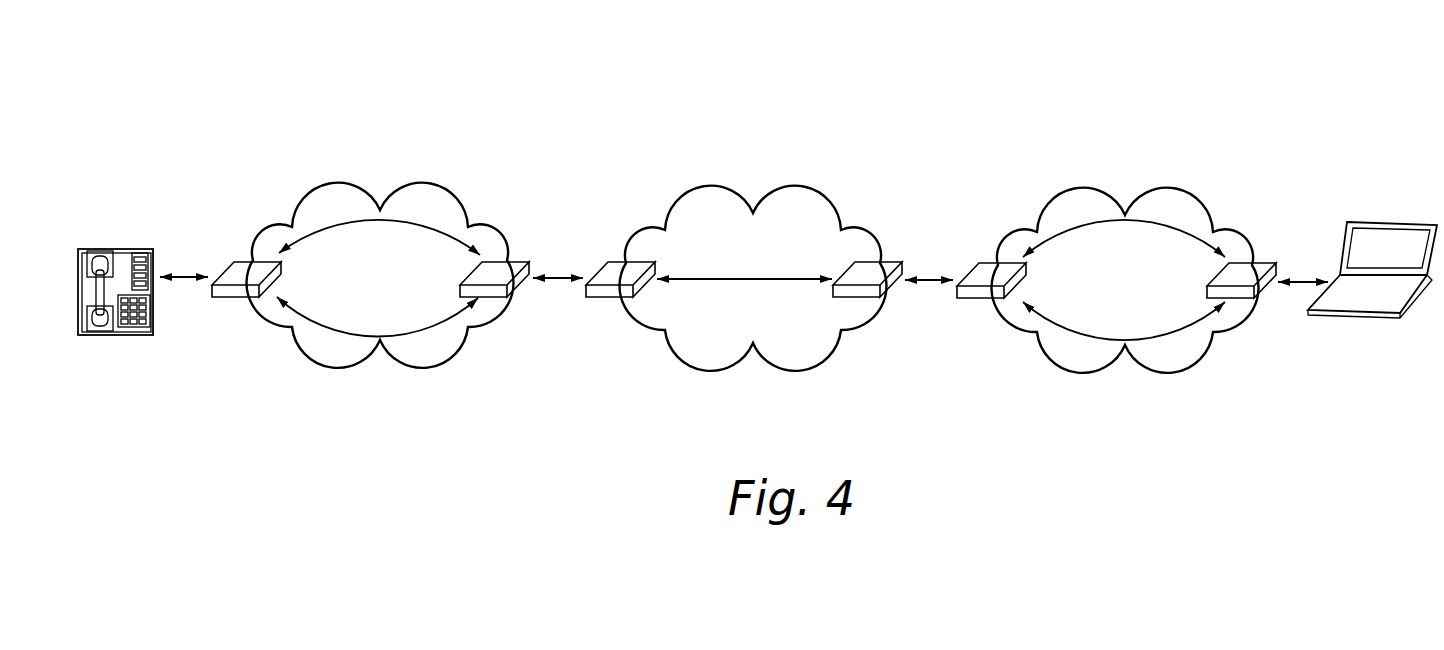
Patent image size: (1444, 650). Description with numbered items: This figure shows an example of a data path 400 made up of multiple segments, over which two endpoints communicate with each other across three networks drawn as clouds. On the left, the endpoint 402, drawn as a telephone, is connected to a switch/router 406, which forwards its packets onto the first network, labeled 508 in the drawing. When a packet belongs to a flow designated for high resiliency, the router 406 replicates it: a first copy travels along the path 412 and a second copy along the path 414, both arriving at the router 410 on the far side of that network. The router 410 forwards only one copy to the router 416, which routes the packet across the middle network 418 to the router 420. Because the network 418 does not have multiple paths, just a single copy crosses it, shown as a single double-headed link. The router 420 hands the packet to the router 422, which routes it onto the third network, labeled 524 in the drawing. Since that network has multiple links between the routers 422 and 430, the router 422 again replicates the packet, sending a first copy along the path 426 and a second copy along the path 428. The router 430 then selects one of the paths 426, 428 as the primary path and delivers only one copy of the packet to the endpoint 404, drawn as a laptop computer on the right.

The data path 400 is at (665, 78).
The endpoint 402 is at (123, 253).
The endpoint 404 is at (1382, 247).
The switch/router 406 is at (233, 292).
The router 410 is at (513, 264).
The path 412 is at (422, 222).
The path 414 is at (430, 328).
The router 416 is at (610, 292).
The network 418 is at (770, 325).
The router 420 is at (890, 265).
The router 422 is at (980, 295).
The path 426 is at (1165, 225).
The path 428 is at (1177, 331).
The router 430 is at (1262, 265).
The network 508 is at (396, 294).
The network 524 is at (1140, 297).